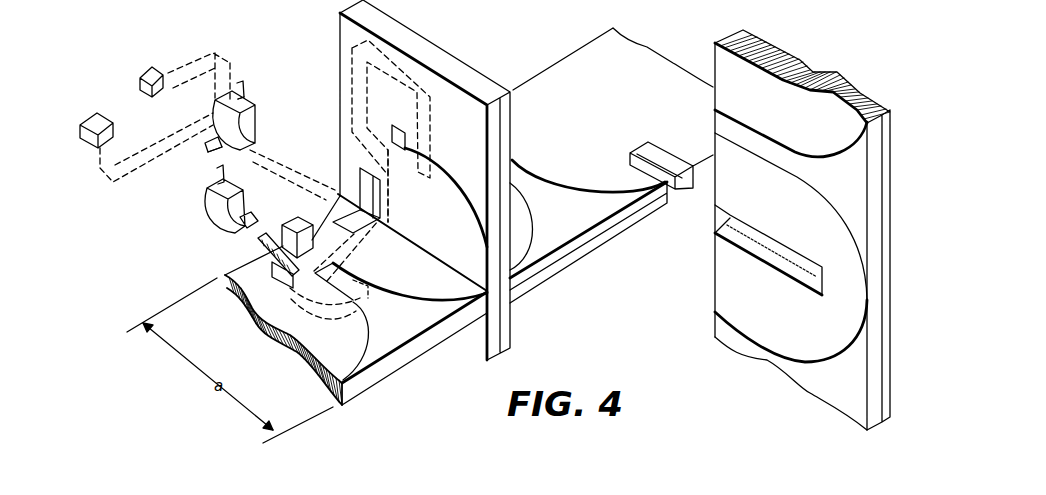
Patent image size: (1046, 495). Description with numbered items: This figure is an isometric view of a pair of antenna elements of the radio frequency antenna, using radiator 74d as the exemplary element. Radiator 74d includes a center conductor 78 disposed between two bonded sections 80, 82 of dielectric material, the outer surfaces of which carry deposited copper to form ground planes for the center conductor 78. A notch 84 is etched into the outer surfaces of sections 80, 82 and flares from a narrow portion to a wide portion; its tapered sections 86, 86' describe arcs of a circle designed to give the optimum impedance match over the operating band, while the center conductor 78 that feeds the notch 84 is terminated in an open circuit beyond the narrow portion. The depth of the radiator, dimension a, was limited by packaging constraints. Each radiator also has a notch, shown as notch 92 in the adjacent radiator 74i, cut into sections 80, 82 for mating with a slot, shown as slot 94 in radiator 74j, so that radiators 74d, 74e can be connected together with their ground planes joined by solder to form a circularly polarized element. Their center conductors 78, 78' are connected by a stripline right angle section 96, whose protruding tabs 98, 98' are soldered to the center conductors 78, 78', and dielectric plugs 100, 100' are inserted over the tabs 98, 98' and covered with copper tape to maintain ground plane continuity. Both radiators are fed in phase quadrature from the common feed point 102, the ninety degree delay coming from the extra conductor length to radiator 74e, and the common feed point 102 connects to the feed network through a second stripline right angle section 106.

The radiator 74d is at (313, 193).
The radiator 74e is at (467, 67).
The adjacent radiator 74i is at (607, 230).
The radiator 74j is at (714, 300).
The center conductor 78 is at (254, 260).
The center conductor 78' is at (381, 191).
The bonded section of dielectric material 80 is at (306, 387).
The bonded section of dielectric material 82 is at (266, 340).
The notch 84 is at (389, 318).
The tapered section 86 is at (499, 227).
The tapered section 86' is at (343, 341).
The notch 92 is at (670, 152).
The slot 94 is at (787, 277).
The stripline right angle section 96 is at (253, 135).
The tab 98 is at (193, 161).
The tab 98' is at (255, 78).
The dielectric plug 100 is at (126, 147).
The dielectric plug 100' is at (164, 69).
The common feed point 102 is at (292, 230).
The second stripline right angle section 106 is at (207, 213).